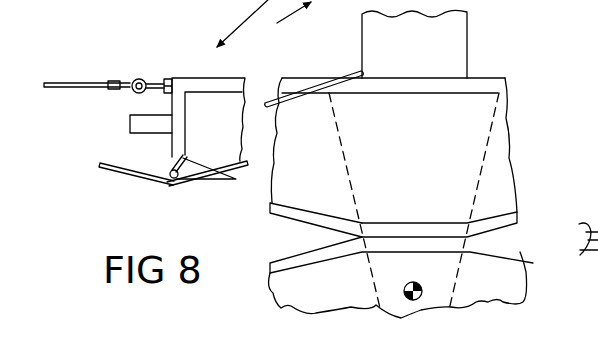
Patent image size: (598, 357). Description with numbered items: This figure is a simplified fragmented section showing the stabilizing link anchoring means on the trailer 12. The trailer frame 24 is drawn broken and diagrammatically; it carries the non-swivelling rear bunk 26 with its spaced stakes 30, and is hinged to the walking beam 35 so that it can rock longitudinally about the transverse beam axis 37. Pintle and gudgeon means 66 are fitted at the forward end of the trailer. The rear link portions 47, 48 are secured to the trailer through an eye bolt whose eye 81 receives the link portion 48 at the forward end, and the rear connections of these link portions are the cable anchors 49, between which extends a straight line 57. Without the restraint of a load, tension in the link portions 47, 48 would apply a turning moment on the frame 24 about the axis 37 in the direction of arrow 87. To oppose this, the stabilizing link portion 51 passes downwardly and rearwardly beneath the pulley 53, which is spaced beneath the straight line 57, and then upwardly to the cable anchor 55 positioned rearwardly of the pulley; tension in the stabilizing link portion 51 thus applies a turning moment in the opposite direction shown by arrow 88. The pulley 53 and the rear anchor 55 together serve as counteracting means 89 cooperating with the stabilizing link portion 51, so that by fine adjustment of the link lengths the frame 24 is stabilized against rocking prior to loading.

The trailer 12 is at (416, 184).
The trailer frame 24 is at (557, 77).
The rear bunk 26 is at (455, 35).
The stakes 30 is at (455, 44).
The walking beam 35 is at (487, 278).
The beam axis 37 is at (403, 288).
The link portion 47 is at (87, 62).
The link portion 48 is at (100, 82).
The cable anchors 49 is at (130, 72).
The stabilizing link portion 51 is at (140, 183).
The pulley 53 is at (180, 182).
The cable anchor 55 is at (357, 72).
The straight line 57 is at (171, 81).
The pintle and gudgeon means 66 is at (148, 120).
The eye 81 is at (145, 79).
The arrow 87 is at (238, 23).
The arrow 88 is at (297, 13).
The counteracting means 89 is at (256, 190).